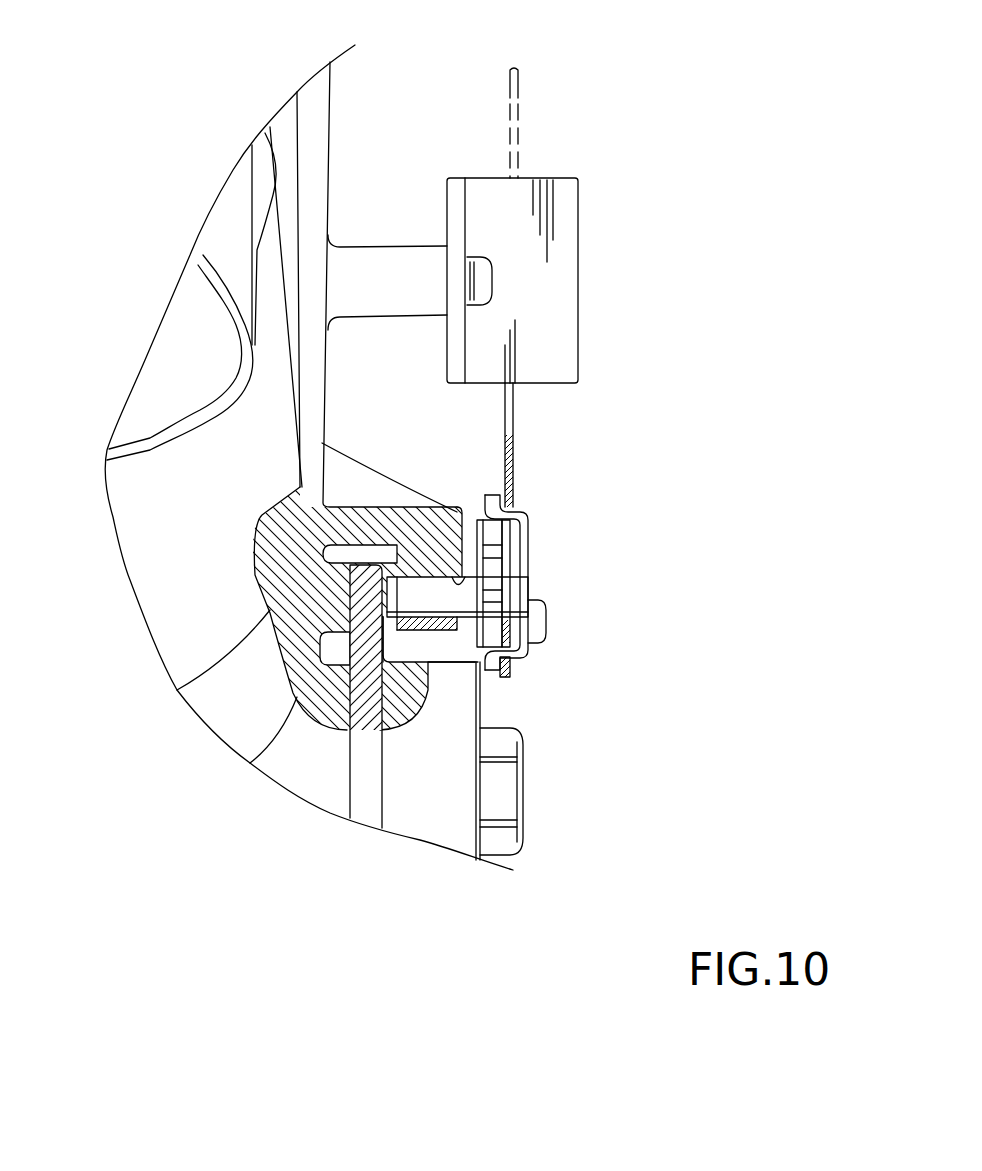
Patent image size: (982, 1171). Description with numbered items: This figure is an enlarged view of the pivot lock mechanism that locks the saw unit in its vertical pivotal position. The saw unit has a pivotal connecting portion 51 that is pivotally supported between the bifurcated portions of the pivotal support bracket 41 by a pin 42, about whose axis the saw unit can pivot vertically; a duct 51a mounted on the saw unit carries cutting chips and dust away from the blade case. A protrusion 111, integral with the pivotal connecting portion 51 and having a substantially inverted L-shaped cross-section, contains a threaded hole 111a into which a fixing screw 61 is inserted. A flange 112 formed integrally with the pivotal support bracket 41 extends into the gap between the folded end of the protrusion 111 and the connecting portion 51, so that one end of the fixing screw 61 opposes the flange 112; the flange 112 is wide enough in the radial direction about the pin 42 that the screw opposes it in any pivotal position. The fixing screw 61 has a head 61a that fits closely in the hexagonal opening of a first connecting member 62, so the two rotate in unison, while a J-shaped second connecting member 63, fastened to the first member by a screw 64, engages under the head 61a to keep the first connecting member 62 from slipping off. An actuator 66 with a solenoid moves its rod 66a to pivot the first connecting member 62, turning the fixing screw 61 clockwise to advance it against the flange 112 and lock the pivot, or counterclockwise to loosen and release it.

The pivotal support bracket 41 is at (447, 808).
The pin 42 is at (518, 777).
The pivotal connecting portion 51 is at (318, 175).
The duct 51a is at (173, 450).
The fixing screw 61 is at (415, 597).
The head 61a is at (490, 600).
The first connecting member 62 is at (511, 668).
The second connecting member 63 is at (529, 527).
The screw 64 is at (547, 627).
The actuator 66 is at (552, 295).
The rod 66a is at (520, 132).
The protrusion 111 is at (438, 627).
The threaded hole 111a is at (462, 585).
The flange 112 is at (367, 613).